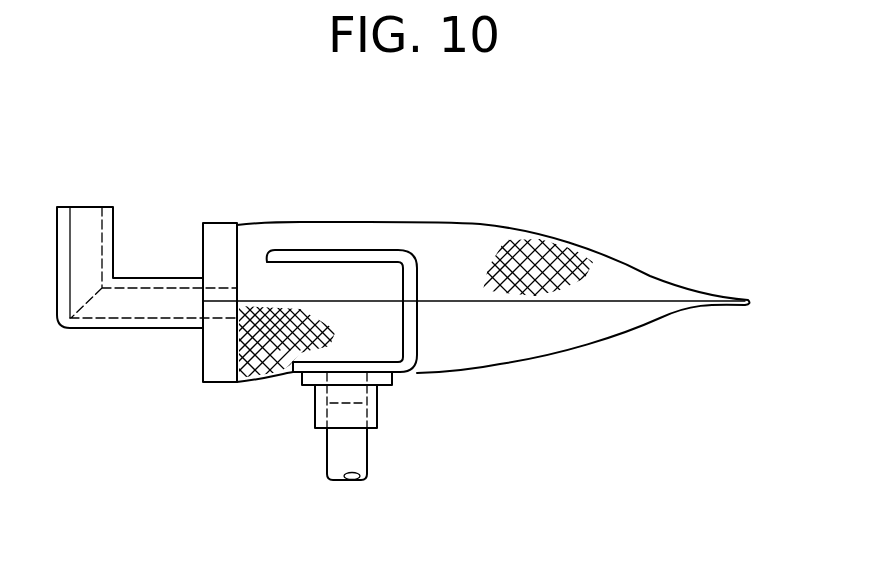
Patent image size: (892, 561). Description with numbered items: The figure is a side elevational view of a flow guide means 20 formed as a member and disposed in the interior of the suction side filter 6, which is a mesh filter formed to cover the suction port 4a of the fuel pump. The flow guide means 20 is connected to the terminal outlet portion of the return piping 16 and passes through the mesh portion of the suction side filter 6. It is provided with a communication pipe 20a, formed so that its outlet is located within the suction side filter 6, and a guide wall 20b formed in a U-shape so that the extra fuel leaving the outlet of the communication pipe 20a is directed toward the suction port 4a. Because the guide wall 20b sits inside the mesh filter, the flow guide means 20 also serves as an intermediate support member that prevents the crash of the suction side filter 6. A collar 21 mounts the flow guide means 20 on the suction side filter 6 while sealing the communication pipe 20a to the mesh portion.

The suction port 4a is at (118, 330).
The suction side filter 6 is at (638, 263).
The return piping 16 is at (367, 455).
The flow guide means 20 is at (415, 327).
The communication pipe 20a is at (313, 398).
The guide wall 20b is at (346, 250).
The collar 21 is at (392, 381).